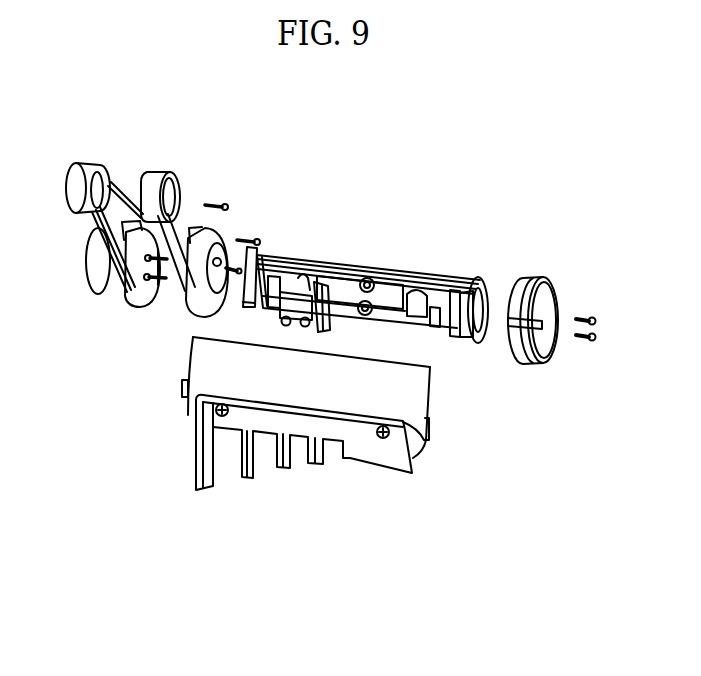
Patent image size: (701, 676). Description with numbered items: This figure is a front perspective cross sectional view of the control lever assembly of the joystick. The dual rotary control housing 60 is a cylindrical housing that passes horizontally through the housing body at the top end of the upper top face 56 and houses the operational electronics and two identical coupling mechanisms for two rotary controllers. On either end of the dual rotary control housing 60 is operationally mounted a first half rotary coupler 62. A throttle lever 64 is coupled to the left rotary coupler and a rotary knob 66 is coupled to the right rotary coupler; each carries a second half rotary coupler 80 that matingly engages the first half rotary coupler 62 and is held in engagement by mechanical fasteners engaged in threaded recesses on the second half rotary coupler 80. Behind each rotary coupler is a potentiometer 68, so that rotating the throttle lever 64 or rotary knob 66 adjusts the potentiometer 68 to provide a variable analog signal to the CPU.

The upper top face 56 is at (287, 417).
The dual rotary control housing 60 is at (372, 264).
The first half rotary coupler 62 is at (255, 311).
The throttle lever 64 is at (153, 184).
The rotary knob 66 is at (540, 283).
The potentiometer 68 is at (336, 310).
The second half rotary coupler 80 is at (228, 233).